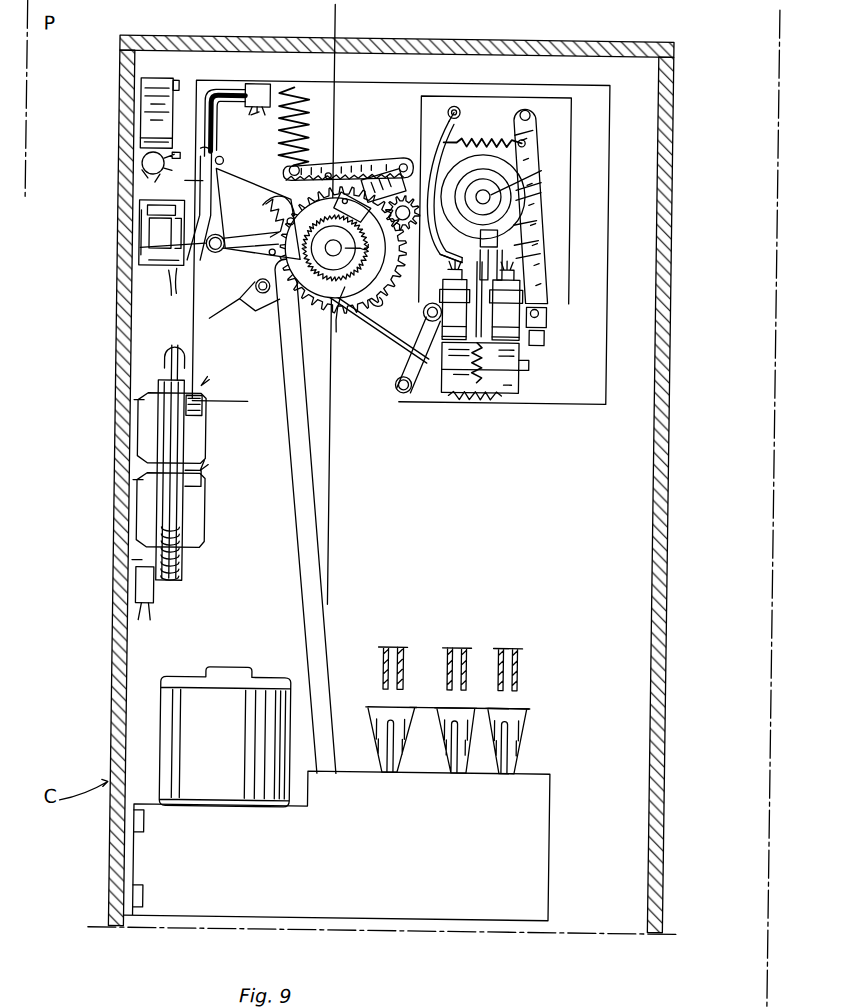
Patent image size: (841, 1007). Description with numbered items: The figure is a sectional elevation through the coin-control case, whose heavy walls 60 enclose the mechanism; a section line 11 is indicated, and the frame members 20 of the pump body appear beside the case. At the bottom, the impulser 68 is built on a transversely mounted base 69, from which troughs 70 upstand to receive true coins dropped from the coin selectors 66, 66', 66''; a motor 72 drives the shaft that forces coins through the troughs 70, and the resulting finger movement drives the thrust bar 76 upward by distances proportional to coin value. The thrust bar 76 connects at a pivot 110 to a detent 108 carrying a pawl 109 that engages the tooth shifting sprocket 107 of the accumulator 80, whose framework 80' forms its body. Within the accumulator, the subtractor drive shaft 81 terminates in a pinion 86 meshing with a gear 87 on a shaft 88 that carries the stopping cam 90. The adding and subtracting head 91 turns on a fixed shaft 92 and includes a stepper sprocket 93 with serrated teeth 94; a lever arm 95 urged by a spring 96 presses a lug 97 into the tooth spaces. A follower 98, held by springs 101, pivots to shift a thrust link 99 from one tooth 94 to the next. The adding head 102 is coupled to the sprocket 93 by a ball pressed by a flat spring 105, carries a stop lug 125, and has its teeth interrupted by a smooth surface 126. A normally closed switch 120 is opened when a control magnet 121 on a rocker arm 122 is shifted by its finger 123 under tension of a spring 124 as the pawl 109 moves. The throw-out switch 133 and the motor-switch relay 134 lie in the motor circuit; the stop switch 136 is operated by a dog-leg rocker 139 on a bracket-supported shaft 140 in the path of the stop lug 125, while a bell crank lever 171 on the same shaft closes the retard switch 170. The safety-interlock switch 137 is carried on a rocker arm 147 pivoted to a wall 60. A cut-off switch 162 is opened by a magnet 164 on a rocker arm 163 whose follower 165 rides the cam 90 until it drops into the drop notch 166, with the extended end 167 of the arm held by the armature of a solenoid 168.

The section line 11 is at (342, 8).
The frame members 20 is at (727, 602).
The walls 60 is at (668, 788).
The coin selector 66 is at (522, 648).
The coin selector 66' is at (467, 647).
The coin selector 66'' is at (402, 646).
The impulser 68 is at (554, 751).
The base 69 is at (337, 845).
The troughs 70 is at (394, 753).
The motor 72 is at (225, 736).
The thrust bar 76 is at (306, 513).
The accumulator 80 is at (532, 200).
The framework 80' is at (419, 246).
The subtractor drive shaft 81 is at (400, 195).
The pinion 86 is at (428, 160).
The gear 87 is at (444, 230).
The shaft 88 is at (534, 162).
The stopping cam 90 is at (512, 180).
The adding and subtracting head 91 is at (261, 219).
The fixed shaft 92 is at (366, 260).
The stepper sprocket 93 is at (380, 287).
The teeth 94 is at (384, 306).
The lever arm 95 is at (344, 168).
The spring 96 is at (280, 134).
The lug 97 is at (325, 170).
The follower 98 is at (455, 112).
The thrust link 99 is at (376, 178).
The springs 101 is at (455, 138).
The adding head 102 is at (338, 328).
The flat spring 105 is at (340, 208).
The tooth shifting sprocket 107 is at (270, 238).
The detent 108 is at (262, 302).
The pawl 109 is at (272, 262).
The pivot 110 is at (256, 286).
The magnet-operated switch 120 is at (444, 394).
The control magnet 121 is at (425, 318).
The rocker arm 122 is at (396, 386).
The extended finger 123 is at (392, 356).
The spring 124 is at (460, 390).
The stop lug 125 is at (280, 209).
The smooth surface 126 is at (295, 203).
The throw-out switch 133 is at (145, 114).
The motor-switch relay 134 is at (140, 255).
The stop switch 136 is at (261, 89).
The safety-interlock switch 137 is at (140, 168).
The rocker 139 is at (211, 196).
The bracket-supported shaft 140 is at (176, 295).
The rocker arm 147 is at (160, 150).
The cut-off switch 162 is at (545, 338).
The rocker arm 163 is at (535, 268).
The magnet 164 is at (547, 313).
The follower 165 is at (535, 196).
The drop notch 166 is at (483, 239).
The extended end 167 is at (530, 365).
The solenoid 168 is at (515, 392).
The retard switch 170 is at (236, 68).
The bell crank lever 171 is at (200, 180).